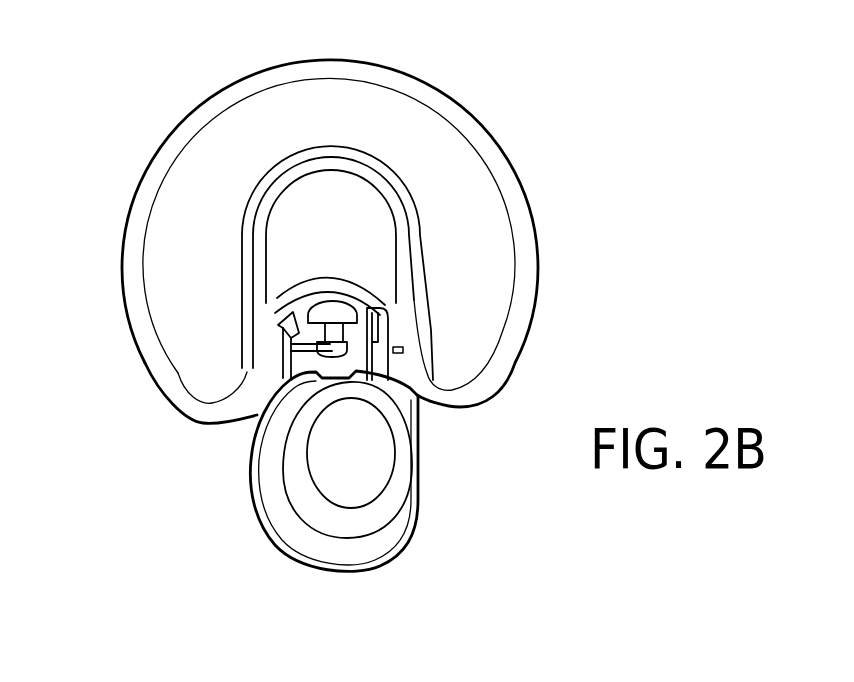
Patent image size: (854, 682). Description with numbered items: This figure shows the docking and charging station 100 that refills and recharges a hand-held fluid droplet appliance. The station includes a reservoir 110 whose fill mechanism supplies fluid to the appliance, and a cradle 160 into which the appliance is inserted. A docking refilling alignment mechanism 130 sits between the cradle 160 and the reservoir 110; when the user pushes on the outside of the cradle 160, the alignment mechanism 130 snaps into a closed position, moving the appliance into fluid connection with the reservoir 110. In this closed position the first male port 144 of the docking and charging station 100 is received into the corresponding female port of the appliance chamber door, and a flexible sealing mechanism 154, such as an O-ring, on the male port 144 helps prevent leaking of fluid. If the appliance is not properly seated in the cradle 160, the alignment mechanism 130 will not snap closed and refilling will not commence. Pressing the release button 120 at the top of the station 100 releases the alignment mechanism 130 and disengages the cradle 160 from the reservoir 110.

The docking and charging station 100 is at (541, 93).
The reservoir 110 is at (503, 232).
The release button 120 is at (328, 207).
The docking refilling alignment mechanism 130 is at (283, 367).
The first male port 144 is at (290, 355).
The flexible sealing mechanism 154 is at (290, 348).
The cradle 160 is at (422, 498).